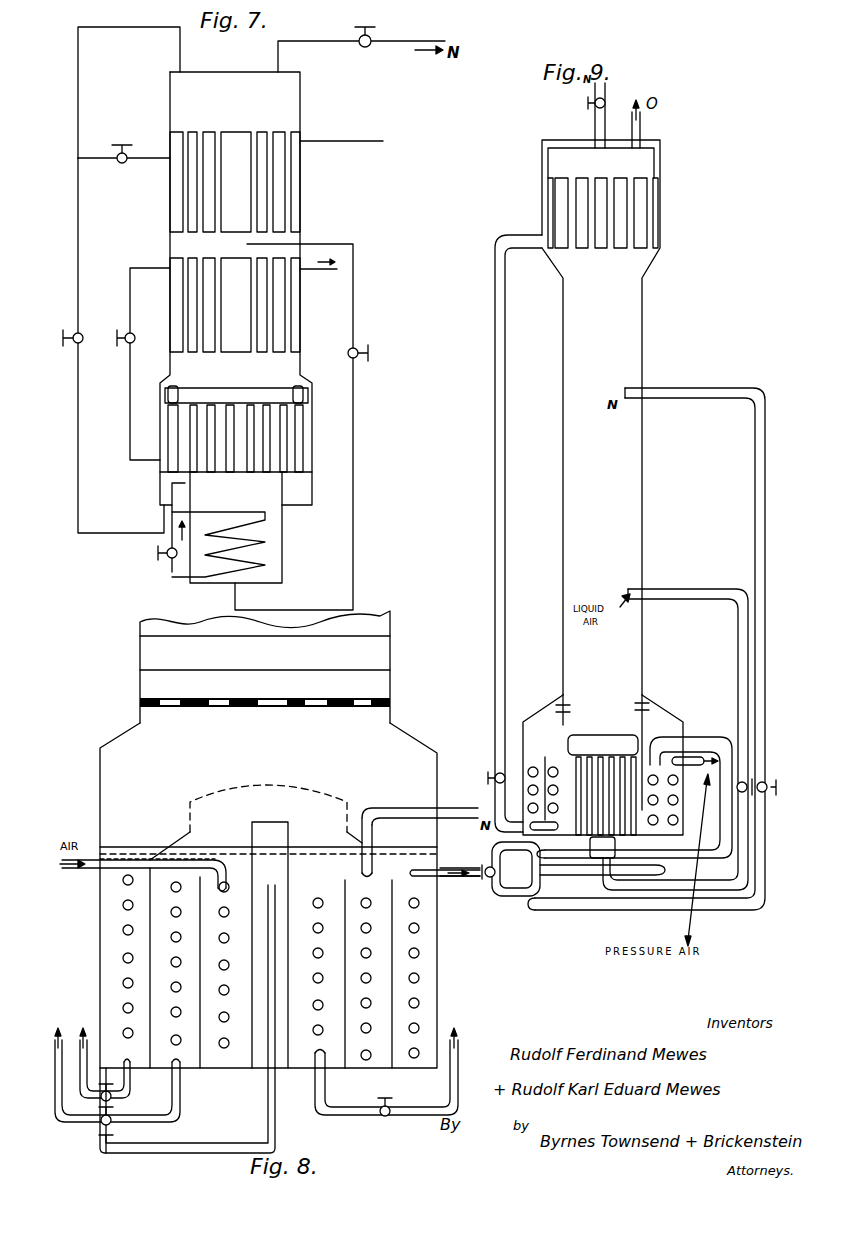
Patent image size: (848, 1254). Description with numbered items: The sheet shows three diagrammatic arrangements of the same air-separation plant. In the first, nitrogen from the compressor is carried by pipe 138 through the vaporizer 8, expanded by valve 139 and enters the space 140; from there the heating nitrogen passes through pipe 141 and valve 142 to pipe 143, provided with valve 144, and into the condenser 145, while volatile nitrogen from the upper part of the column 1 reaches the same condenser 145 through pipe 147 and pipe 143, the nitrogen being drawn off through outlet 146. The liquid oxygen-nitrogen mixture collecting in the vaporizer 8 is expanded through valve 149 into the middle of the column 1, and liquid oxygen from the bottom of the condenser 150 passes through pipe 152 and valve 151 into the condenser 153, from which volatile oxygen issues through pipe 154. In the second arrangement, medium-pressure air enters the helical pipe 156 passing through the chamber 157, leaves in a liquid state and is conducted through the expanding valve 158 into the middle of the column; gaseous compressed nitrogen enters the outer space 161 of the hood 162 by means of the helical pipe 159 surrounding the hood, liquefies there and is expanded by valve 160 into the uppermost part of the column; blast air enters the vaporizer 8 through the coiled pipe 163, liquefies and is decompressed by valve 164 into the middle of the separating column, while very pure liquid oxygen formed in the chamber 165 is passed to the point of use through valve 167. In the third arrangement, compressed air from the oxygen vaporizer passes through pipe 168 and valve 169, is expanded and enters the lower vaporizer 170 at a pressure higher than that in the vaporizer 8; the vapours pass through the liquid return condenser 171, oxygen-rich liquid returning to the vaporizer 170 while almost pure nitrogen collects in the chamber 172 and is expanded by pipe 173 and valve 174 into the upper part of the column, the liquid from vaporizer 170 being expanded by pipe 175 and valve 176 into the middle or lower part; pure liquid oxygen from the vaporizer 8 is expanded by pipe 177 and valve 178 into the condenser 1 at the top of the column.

In FIG. 7, the column 1 is at (240, 380).
In FIG. 9, the column 1 is at (660, 208).
In FIG. 7, the vaporizer 8 is at (218, 533).
In FIG. 8, the vaporizer 8 is at (404, 884).
In FIG. 9, the vaporizer 8 is at (550, 716).
In FIG. 7, the pipe 138 is at (180, 588).
In FIG. 7, the valve 139 is at (168, 565).
In FIG. 7, the space 140 is at (292, 502).
In FIG. 7, the pipe 141 is at (78, 472).
In FIG. 7, the valve 142 is at (75, 333).
In FIG. 7, the pipe 143 is at (101, 152).
In FIG. 7, the valve 144 is at (120, 165).
In FIG. 7, the condenser 145 is at (176, 192).
In FIG. 7, the outlet 146 is at (355, 148).
In FIG. 7, the pipe 147 is at (181, 54).
In FIG. 7, the valve 149 is at (360, 348).
In FIG. 7, the condenser 150 is at (306, 434).
In FIG. 7, the valve 151 is at (128, 332).
In FIG. 7, the pipe 152 is at (130, 380).
In FIG. 7, the condenser 153 is at (173, 268).
In FIG. 7, the pipe 154 is at (312, 284).
In FIG. 8, the pipe 156 is at (86, 868).
In FIG. 8, the chamber 157 is at (345, 884).
In FIG. 8, the expanding valve 158 is at (392, 1106).
In FIG. 8, the pipe 159 is at (472, 808).
In FIG. 8, the valve 160 is at (112, 1126).
In FIG. 8, the outer space 161 is at (366, 857).
In FIG. 8, the hood 162 is at (243, 780).
In FIG. 8, the pipe 163 is at (438, 878).
In FIG. 8, the valve 164 is at (116, 1098).
In FIG. 8, the chamber 165 is at (277, 828).
In FIG. 8, the valve 167 is at (104, 1153).
In FIG. 9, the pipe 168 is at (692, 752).
In FIG. 9, the valve 169 is at (486, 866).
In FIG. 9, the vaporizer 170 is at (673, 877).
In FIG. 9, the condenser 171 is at (600, 740).
In FIG. 9, the chamber 172 is at (592, 858).
In FIG. 9, the pipe 173 is at (733, 900).
In FIG. 9, the valve 174 is at (750, 795).
In FIG. 9, the pipe 175 is at (738, 665).
In FIG. 9, the valve 176 is at (768, 782).
In FIG. 9, the pipe 177 is at (498, 477).
In FIG. 9, the valve 178 is at (496, 772).